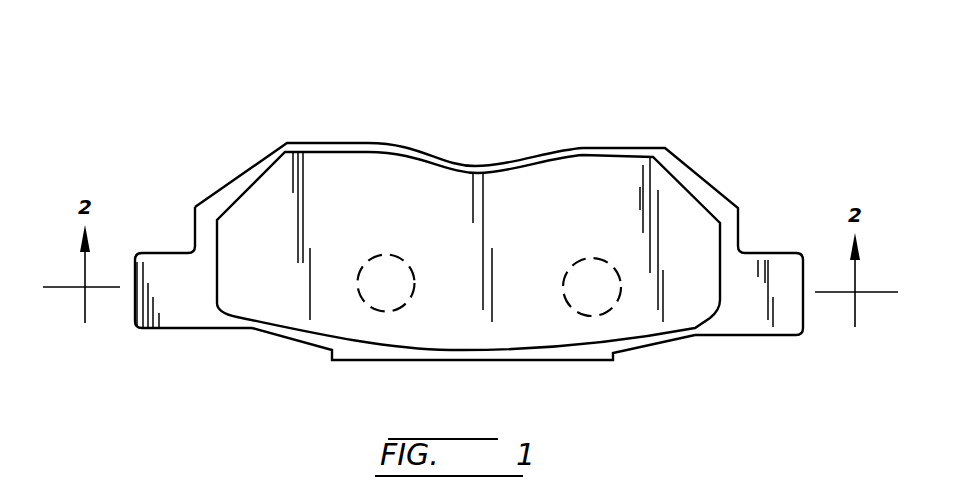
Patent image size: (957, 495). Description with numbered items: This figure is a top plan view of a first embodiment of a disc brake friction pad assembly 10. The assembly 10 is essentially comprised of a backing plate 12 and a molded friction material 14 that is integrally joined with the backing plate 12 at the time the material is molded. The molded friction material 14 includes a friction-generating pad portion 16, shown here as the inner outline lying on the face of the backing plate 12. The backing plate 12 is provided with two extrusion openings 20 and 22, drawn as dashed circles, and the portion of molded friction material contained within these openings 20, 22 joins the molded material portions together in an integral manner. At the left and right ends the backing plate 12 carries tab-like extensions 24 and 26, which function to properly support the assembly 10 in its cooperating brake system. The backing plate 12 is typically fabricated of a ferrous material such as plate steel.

The disc brake friction pad assembly 10 is at (722, 145).
The backing plate 12 is at (728, 195).
The molded friction material 14 is at (693, 337).
The friction-generating pad portion 16 is at (650, 160).
The extrusion opening 20 is at (384, 318).
The extrusion opening 22 is at (589, 322).
The tab-like extension 24 is at (172, 267).
The tab-like extension 26 is at (785, 325).